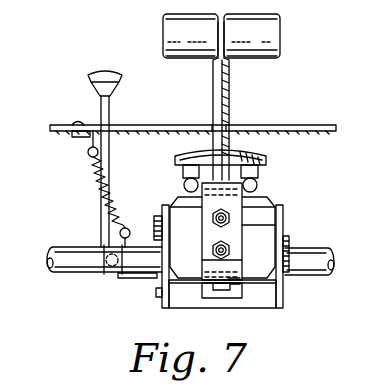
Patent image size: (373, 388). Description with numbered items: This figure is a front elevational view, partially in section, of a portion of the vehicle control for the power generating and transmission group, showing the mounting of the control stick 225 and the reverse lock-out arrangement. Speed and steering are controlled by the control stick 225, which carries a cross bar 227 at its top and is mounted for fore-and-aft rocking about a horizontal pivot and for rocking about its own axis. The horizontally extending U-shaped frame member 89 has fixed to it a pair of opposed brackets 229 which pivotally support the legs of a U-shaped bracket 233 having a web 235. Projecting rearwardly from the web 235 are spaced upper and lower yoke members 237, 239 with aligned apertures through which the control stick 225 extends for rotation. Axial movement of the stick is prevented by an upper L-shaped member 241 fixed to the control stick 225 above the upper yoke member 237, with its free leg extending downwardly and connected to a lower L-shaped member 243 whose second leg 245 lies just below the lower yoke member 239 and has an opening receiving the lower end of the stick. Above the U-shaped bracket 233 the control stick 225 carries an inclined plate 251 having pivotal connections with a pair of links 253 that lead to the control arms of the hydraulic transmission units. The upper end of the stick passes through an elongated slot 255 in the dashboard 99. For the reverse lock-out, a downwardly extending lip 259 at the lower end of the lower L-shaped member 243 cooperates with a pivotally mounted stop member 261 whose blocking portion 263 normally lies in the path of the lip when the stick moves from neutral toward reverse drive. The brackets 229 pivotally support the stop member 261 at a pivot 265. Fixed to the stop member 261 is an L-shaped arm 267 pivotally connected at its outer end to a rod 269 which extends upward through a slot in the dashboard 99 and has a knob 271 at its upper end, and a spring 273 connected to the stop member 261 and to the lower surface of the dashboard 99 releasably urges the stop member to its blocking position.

The U-shaped member 89 is at (317, 258).
The dashboard 99 is at (330, 125).
The control stick 225 is at (230, 85).
The cross bar 227 is at (270, 43).
The brackets 229 is at (162, 212).
The U-shaped bracket 233 is at (255, 218).
The web 235 is at (258, 227).
The upper yoke member 237 is at (185, 210).
The lower yoke member 239 is at (195, 262).
The upper L-shaped member 241 is at (232, 205).
The lower L-shaped member 243 is at (234, 276).
The second leg 245 is at (238, 287).
The plate 251 is at (258, 125).
The links 253 is at (183, 186).
The elongated slot 255 is at (193, 125).
The lip 259 is at (220, 298).
The stop member 261 is at (165, 300).
The blocking portion 263 is at (180, 305).
The pivot 265 is at (150, 290).
The L-shaped arm 267 is at (137, 280).
The rod 269 is at (100, 224).
The knob 271 is at (104, 76).
The spring 273 is at (95, 175).